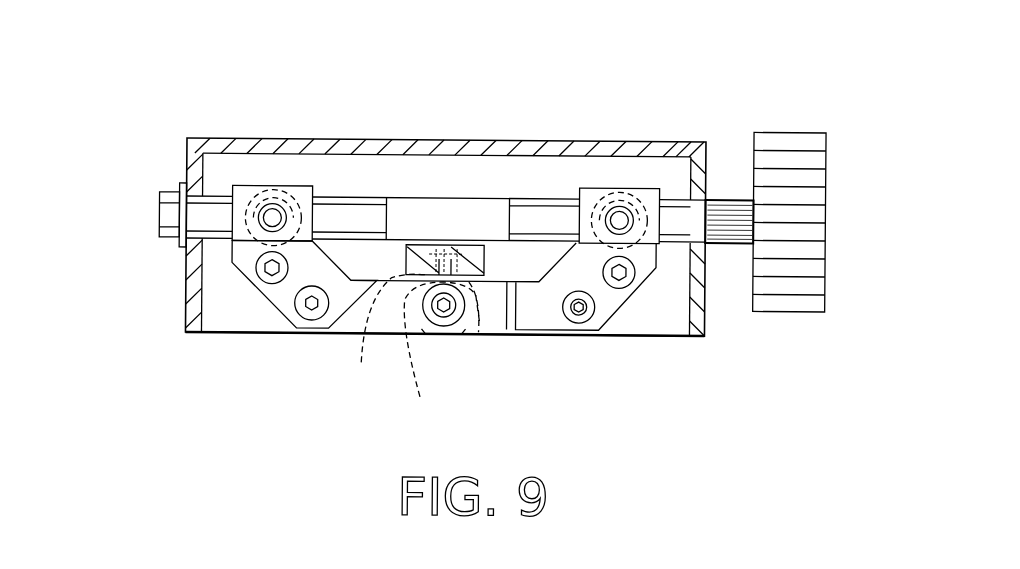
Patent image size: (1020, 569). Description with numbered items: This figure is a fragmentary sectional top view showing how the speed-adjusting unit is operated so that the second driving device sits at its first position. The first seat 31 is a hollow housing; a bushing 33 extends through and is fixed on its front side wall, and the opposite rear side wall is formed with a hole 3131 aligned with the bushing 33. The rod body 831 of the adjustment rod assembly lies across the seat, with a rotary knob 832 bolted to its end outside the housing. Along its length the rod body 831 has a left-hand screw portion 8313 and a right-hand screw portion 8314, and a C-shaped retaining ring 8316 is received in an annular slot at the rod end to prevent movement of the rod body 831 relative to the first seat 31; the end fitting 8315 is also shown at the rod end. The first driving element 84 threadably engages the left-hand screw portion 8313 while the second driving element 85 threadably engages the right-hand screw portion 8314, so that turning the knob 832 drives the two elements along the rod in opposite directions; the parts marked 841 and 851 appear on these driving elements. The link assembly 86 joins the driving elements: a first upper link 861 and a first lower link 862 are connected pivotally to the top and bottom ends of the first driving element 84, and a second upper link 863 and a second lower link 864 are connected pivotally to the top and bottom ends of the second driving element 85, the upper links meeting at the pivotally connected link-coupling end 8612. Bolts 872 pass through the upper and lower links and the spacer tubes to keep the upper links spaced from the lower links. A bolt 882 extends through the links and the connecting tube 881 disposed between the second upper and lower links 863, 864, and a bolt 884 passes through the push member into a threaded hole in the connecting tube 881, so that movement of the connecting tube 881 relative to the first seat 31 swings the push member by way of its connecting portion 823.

The first seat 31 is at (387, 139).
The hole 3131 is at (198, 183).
The left-hand screw portion 8313 is at (693, 182).
The bushing 33 is at (694, 136).
The rod body 831 is at (445, 193).
The right-hand screw portion 8314 is at (340, 197).
The bolt head 8315 is at (165, 200).
The C-shaped retaining ring 8316 is at (183, 243).
The rotary knob 832 is at (792, 132).
The first driving element 84 is at (603, 192).
The right slide block 841 is at (606, 193).
The second driving element 85 is at (252, 194).
The left slide block 851 is at (295, 190).
The link assembly 86 is at (707, 296).
The first upper link 861 is at (623, 294).
The first lower link 862 is at (619, 272).
The second upper link 863 is at (258, 282).
The second lower link 864 is at (293, 286).
The bolt 872 is at (584, 304).
The bolt 882 is at (450, 303).
The link-coupling end 8612 is at (433, 323).
The connecting tube 881 is at (441, 357).
The bolt 884 is at (410, 344).
The connecting portion 823 is at (406, 257).